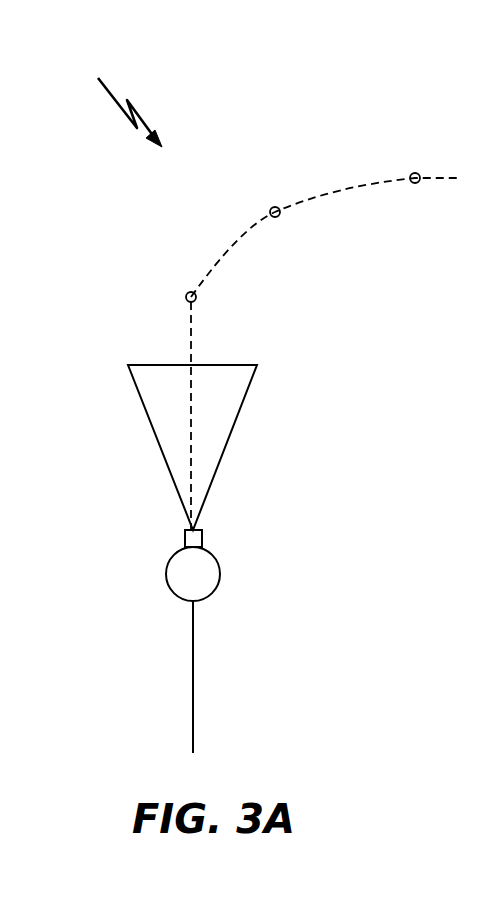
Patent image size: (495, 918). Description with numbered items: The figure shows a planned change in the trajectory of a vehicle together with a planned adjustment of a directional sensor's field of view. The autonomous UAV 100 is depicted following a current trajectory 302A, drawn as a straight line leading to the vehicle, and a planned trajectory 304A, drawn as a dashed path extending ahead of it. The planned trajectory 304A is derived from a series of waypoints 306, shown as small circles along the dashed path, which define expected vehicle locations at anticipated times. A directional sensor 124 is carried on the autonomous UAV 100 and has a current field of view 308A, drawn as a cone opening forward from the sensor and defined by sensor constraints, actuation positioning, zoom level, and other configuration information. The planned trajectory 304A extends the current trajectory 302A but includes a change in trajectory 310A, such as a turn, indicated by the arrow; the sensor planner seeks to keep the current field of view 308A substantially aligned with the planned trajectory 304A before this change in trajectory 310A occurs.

The autonomous UAV 100 is at (167, 567).
The directional sensor 124 is at (203, 541).
The current trajectory 302A is at (193, 670).
The planned trajectory 304A is at (357, 188).
The waypoints 306 is at (191, 292).
The current field of view 308A is at (162, 457).
The change in trajectory 310A is at (118, 96).